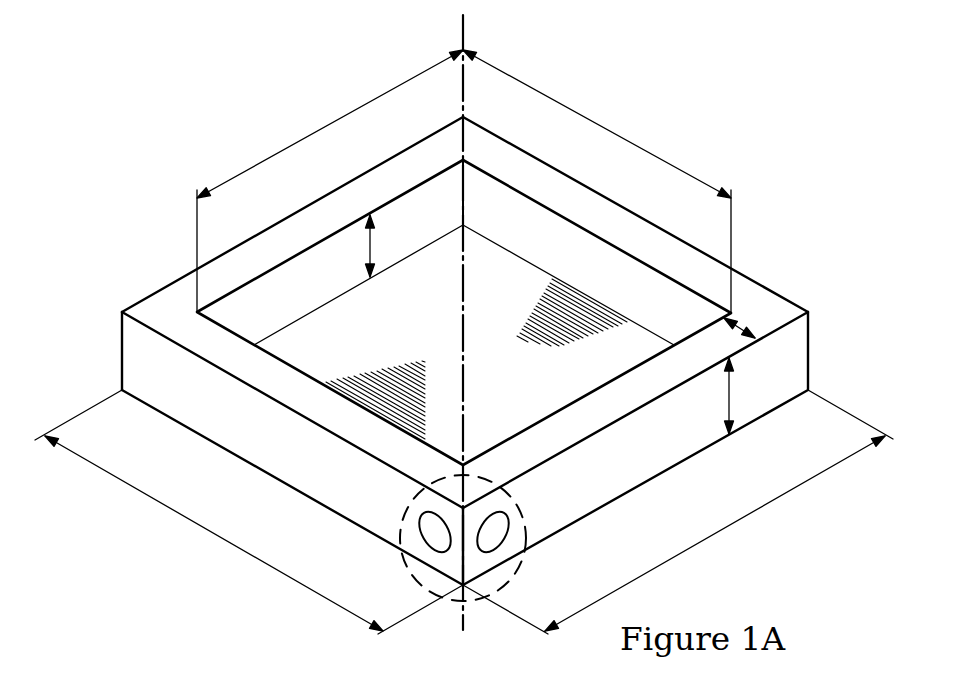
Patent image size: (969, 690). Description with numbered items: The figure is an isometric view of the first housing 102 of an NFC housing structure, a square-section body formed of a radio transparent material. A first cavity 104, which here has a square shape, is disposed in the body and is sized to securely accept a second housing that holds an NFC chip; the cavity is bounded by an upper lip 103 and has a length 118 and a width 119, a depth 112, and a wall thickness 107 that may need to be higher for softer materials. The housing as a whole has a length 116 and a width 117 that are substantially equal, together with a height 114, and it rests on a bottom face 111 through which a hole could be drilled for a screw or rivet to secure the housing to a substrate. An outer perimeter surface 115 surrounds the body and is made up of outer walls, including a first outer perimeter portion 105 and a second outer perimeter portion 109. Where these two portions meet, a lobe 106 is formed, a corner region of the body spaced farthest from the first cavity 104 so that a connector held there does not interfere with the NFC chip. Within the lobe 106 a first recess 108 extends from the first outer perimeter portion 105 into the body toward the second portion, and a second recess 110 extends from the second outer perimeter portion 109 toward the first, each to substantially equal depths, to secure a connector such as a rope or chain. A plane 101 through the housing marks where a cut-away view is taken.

The plane 101 is at (465, 35).
The first housing 102 is at (165, 280).
The upper lip 103 is at (595, 232).
The first cavity 104 is at (330, 275).
The first outer perimeter portion 105 is at (283, 457).
The lobe 106 is at (530, 527).
The wall thickness 107 is at (746, 330).
The first recess 108 is at (435, 540).
The second outer perimeter portion 109 is at (665, 447).
The second recess 110 is at (492, 540).
The bottom face 111 is at (498, 268).
The depth 112 is at (372, 245).
The height 114 is at (730, 395).
The outer perimeter surface 115 is at (130, 350).
The length 116 is at (217, 534).
The width 117 is at (715, 534).
The length 118 is at (588, 120).
The width 119 is at (346, 117).